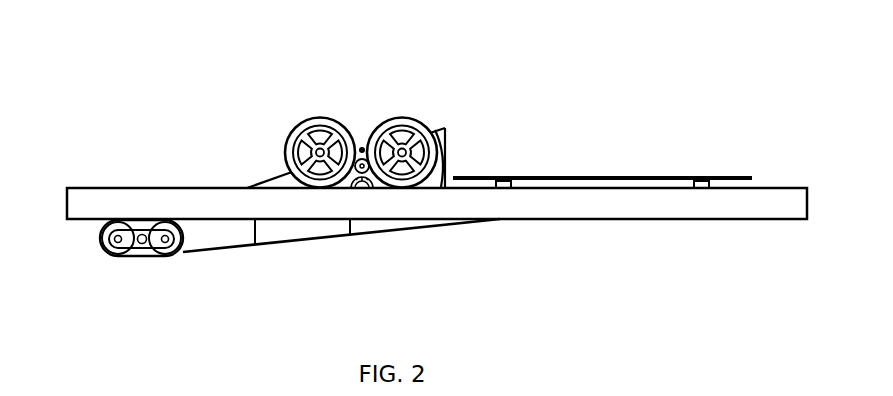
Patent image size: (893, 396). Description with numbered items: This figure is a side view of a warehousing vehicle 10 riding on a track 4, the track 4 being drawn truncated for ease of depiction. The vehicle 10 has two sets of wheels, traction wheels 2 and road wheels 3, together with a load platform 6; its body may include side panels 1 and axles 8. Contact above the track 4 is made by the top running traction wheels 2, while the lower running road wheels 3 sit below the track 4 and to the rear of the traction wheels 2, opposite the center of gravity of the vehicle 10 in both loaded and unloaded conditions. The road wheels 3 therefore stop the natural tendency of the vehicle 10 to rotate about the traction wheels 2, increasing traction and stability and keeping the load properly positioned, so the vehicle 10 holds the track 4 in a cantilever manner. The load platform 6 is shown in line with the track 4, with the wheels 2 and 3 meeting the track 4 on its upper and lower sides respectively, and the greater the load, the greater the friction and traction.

The side panels 1 is at (307, 237).
The traction wheels 2 is at (303, 118).
The road wheels 3 is at (190, 254).
The track 4 is at (106, 191).
The load platform 6 is at (680, 174).
The axles 8 is at (364, 148).
The vehicle 10 is at (502, 119).